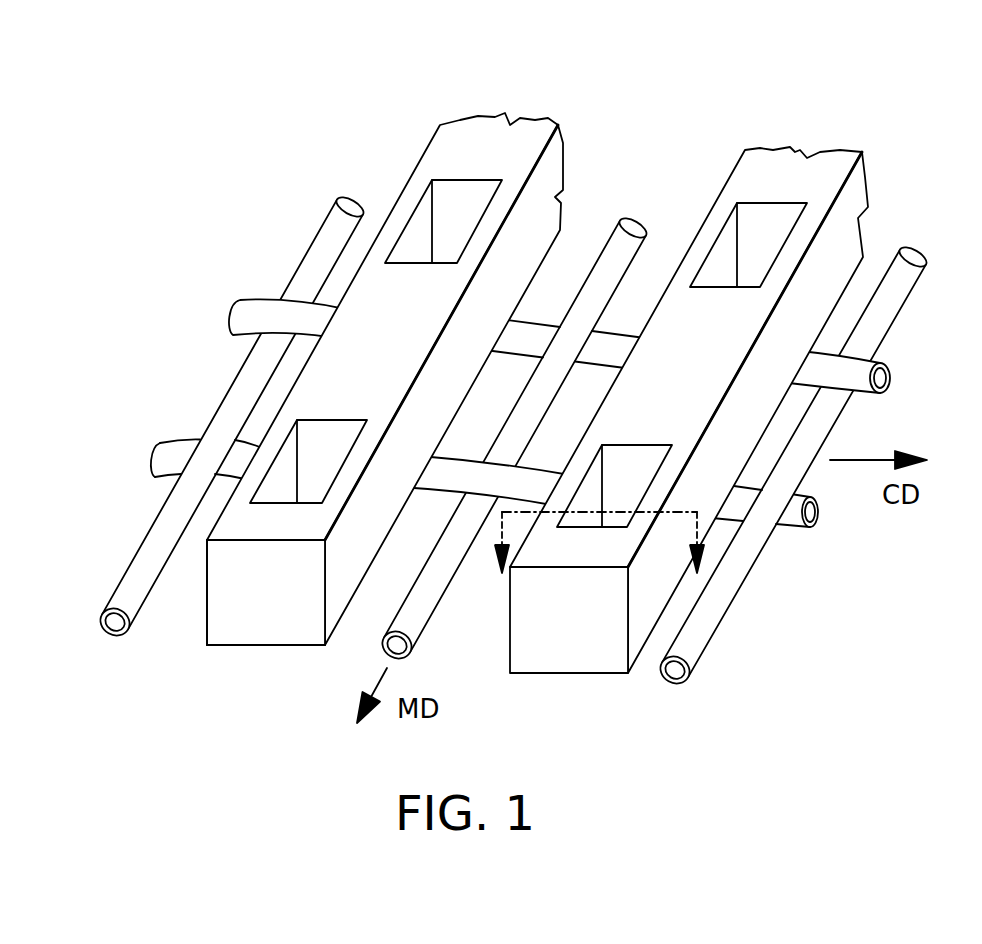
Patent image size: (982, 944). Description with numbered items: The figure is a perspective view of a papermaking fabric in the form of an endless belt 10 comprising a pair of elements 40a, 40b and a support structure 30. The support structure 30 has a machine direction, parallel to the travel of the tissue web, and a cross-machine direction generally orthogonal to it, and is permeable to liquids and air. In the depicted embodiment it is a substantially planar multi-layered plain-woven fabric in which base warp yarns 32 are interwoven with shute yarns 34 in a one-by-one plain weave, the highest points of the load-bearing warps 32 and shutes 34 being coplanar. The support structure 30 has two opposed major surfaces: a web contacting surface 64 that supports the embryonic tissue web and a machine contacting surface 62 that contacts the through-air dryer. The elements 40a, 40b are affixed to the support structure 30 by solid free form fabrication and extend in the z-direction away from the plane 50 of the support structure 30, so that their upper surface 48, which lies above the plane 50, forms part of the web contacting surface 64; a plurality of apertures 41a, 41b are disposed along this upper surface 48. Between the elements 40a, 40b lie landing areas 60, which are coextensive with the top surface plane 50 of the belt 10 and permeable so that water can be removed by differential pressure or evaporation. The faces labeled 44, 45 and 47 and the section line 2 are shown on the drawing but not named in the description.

The endless belt 10 is at (191, 178).
The support structure 30 is at (223, 397).
The base warp yarns 32 is at (675, 673).
The shute yarns 34 is at (818, 517).
The element 40a is at (385, 374).
The element 40b is at (689, 382).
The aperture 41a is at (763, 240).
The aperture 41b is at (625, 455).
The bottom face 44 is at (273, 645).
The side face 45 is at (207, 596).
The side surface 47 is at (532, 258).
The upper surface 48 is at (400, 348).
The plane 50 is at (492, 434).
The landing areas 60 is at (583, 235).
The machine contacting surface 62 is at (598, 728).
The web contacting surface 64 is at (340, 112).
The section line 2- 2 is at (589, 545).